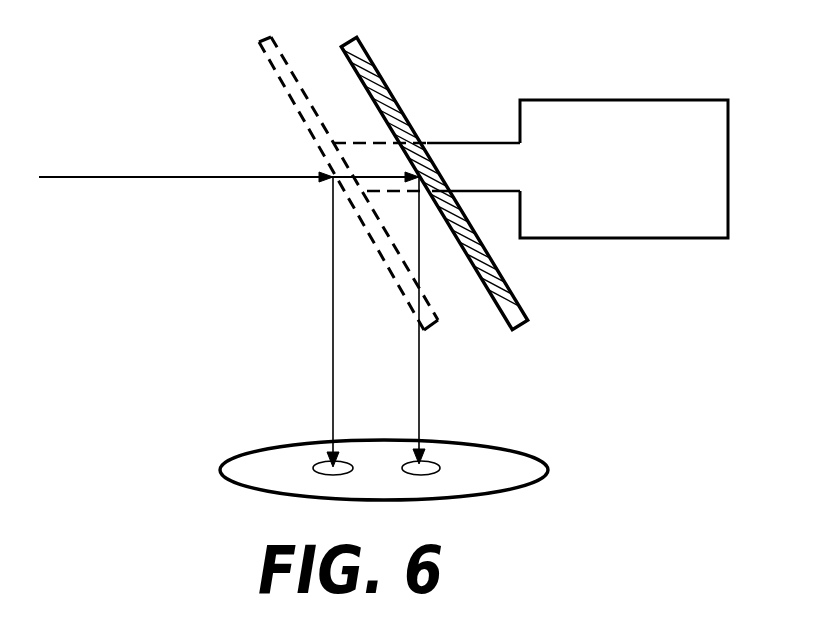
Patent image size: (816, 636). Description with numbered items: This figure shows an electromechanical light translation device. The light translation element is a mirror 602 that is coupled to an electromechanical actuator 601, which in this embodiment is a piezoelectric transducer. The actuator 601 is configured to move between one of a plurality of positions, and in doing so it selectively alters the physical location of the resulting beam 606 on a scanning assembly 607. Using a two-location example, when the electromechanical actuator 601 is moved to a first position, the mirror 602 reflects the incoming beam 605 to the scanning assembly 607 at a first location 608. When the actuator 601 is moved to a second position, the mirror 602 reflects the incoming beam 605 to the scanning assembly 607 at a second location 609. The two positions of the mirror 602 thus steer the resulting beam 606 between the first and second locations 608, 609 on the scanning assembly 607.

The electromechanical actuator 601 is at (577, 98).
The mirror 602 is at (400, 108).
The incoming beam 605 is at (230, 175).
The resulting beam 606 is at (419, 340).
The scanning assembly 607 is at (217, 475).
The first location 608 is at (317, 463).
The second location 609 is at (437, 465).